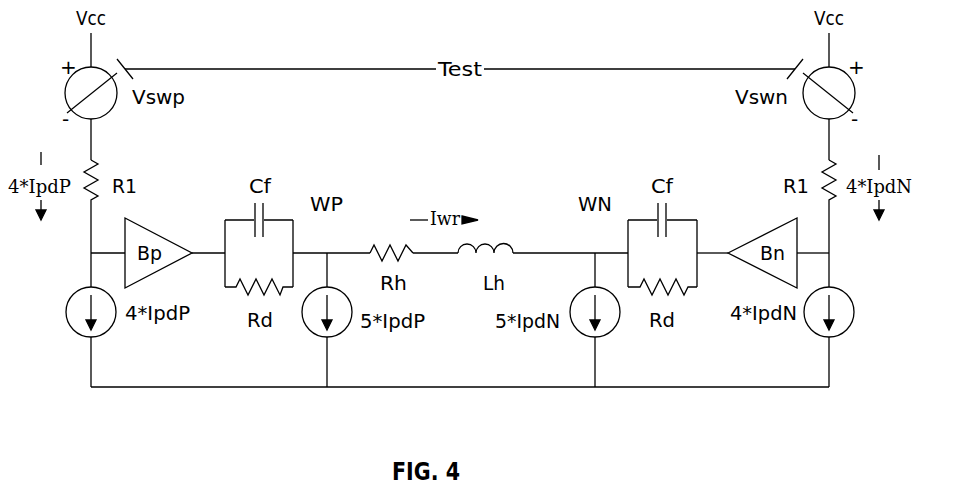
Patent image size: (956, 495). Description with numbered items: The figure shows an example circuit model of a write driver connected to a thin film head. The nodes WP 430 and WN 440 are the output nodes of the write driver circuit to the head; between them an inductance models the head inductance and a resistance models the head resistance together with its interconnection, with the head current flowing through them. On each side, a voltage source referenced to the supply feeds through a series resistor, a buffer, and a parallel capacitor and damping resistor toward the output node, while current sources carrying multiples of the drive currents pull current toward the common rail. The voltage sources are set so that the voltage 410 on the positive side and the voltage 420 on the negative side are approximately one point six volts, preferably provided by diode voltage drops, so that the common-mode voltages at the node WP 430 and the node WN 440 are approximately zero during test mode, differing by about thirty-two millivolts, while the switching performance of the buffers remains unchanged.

The voltage Vcc-VswP 410 is at (92, 135).
The voltage Vcc-VswN 420 is at (829, 147).
The node WP 430 is at (327, 253).
The node WN 440 is at (595, 253).